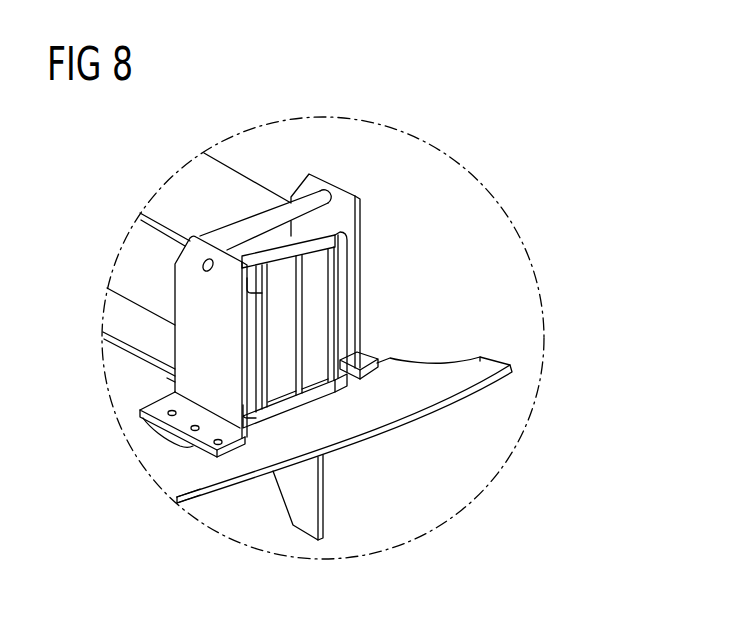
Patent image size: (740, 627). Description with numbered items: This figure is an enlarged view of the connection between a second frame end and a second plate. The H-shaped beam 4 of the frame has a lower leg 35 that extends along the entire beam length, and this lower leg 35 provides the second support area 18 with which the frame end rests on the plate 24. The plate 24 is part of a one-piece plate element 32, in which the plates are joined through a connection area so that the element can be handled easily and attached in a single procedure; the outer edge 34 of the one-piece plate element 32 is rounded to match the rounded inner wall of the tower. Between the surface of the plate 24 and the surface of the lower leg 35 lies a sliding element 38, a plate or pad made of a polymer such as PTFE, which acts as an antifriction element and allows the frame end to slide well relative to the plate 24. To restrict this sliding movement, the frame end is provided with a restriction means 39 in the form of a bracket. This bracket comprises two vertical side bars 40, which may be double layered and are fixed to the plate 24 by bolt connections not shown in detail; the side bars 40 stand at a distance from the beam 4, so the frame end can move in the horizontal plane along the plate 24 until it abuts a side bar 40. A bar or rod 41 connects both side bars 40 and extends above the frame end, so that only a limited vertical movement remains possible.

The H-shaped beam 4 is at (180, 189).
The second support area 18 is at (280, 410).
The plate 24 is at (468, 376).
The one-piece plate element 32 is at (189, 484).
The outer edge 34 is at (169, 474).
The lower leg 35 is at (305, 385).
The sliding element 38 is at (272, 407).
The restriction means 39 is at (348, 180).
The vertical side bars 40 is at (195, 338).
The bar or rod 41 is at (270, 236).